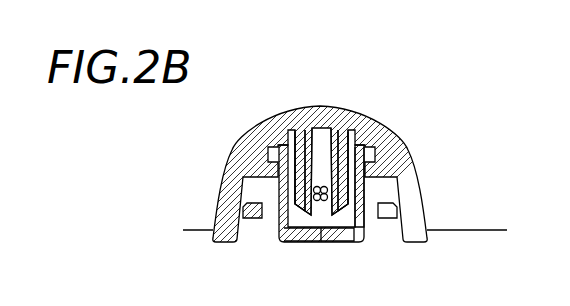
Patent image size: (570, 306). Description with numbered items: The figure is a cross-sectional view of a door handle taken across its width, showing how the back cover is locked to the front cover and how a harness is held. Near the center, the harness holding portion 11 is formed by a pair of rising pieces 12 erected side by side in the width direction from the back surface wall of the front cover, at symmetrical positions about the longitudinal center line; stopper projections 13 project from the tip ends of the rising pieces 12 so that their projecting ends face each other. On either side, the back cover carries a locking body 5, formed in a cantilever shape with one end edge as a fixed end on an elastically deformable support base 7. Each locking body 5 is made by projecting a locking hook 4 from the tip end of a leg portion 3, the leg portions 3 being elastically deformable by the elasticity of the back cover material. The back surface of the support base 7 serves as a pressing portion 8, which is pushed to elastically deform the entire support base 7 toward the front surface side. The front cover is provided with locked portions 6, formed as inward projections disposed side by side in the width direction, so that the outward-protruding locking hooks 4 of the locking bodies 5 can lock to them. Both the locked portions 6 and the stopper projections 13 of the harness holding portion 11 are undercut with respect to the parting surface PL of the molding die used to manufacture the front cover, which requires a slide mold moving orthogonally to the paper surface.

The leg portion 3 is at (274, 207).
The locking hook 4 is at (267, 146).
The locking body 5 is at (372, 191).
The locked portion 6 is at (262, 150).
The support base 7 is at (303, 235).
The pressing portion 8 is at (337, 235).
The harness holding portion 11 is at (272, 62).
The rising piece 12 is at (308, 157).
The stopper projection 13 is at (291, 165).
The parting surface PL is at (491, 217).